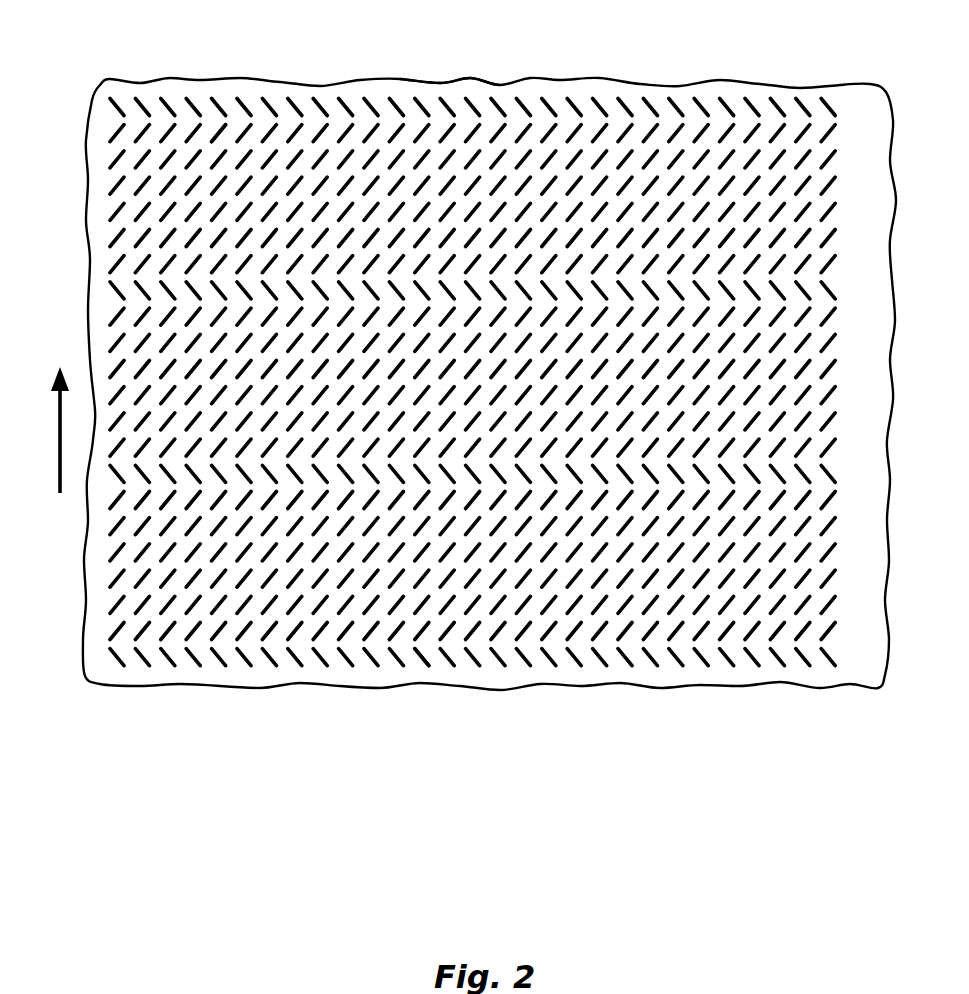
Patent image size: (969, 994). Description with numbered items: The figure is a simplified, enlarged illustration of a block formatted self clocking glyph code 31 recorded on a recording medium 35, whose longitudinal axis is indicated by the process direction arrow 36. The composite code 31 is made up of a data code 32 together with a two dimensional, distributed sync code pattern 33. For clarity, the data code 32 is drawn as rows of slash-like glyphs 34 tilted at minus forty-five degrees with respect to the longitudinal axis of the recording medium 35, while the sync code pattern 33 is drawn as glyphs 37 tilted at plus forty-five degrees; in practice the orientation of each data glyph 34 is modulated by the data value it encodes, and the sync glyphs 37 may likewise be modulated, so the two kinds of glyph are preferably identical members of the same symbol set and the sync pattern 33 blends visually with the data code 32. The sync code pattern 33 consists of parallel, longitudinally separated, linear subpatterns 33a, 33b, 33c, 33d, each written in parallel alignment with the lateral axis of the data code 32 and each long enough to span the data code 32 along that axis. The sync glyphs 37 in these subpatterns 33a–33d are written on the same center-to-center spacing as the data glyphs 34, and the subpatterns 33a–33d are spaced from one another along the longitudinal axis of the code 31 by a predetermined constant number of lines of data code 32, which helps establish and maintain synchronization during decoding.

The self clocking glyph code 31 is at (584, 90).
The data code 32 is at (851, 137).
The sync code pattern 33 is at (474, 403).
The sync code subpattern 33a is at (843, 108).
The sync code subpattern 33b is at (851, 292).
The sync code subpattern 33c is at (851, 476).
The sync code subpattern 33d is at (850, 661).
The data glyph 34 is at (216, 131).
The recording medium 35 is at (455, 80).
The process direction arrow 36 is at (57, 408).
The sync code glyph 37 is at (411, 670).